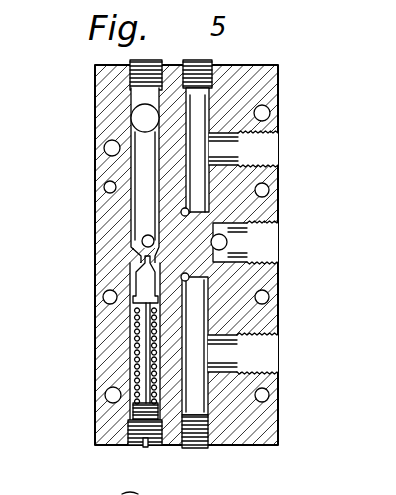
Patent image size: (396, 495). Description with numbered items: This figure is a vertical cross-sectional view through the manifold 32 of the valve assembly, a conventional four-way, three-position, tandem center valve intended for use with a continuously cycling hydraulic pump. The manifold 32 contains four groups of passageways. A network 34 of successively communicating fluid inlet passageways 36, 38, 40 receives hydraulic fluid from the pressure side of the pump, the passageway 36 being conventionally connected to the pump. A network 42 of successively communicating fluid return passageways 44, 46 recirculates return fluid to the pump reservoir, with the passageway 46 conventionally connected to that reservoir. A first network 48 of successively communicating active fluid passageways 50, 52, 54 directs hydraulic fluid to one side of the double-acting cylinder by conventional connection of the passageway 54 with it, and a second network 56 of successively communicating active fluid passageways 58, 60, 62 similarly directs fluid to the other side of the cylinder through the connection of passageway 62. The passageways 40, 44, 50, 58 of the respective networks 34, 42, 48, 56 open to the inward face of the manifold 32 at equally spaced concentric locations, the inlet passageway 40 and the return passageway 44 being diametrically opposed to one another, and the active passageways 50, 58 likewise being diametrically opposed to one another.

The manifold 32 is at (279, 423).
The network of fluid inlet passageways 34 is at (128, 112).
The fluid inlet passageway 36 is at (141, 124).
The fluid inlet passageway 38 is at (142, 163).
The fluid inlet passageway 40 is at (146, 243).
The network of fluid return passageways 42 is at (279, 247).
The fluid return passageway 44 is at (228, 241).
The fluid return passageway 46 is at (268, 258).
The first network of active fluid passageways 48 is at (279, 160).
The active fluid passageway 50 is at (215, 221).
The active fluid passageway 52 is at (199, 107).
The active fluid passageway 54 is at (268, 148).
The second network of active fluid passageways 56 is at (279, 357).
The active fluid passageway 58 is at (196, 280).
The active fluid passageway 60 is at (196, 332).
The active fluid passageway 62 is at (257, 363).